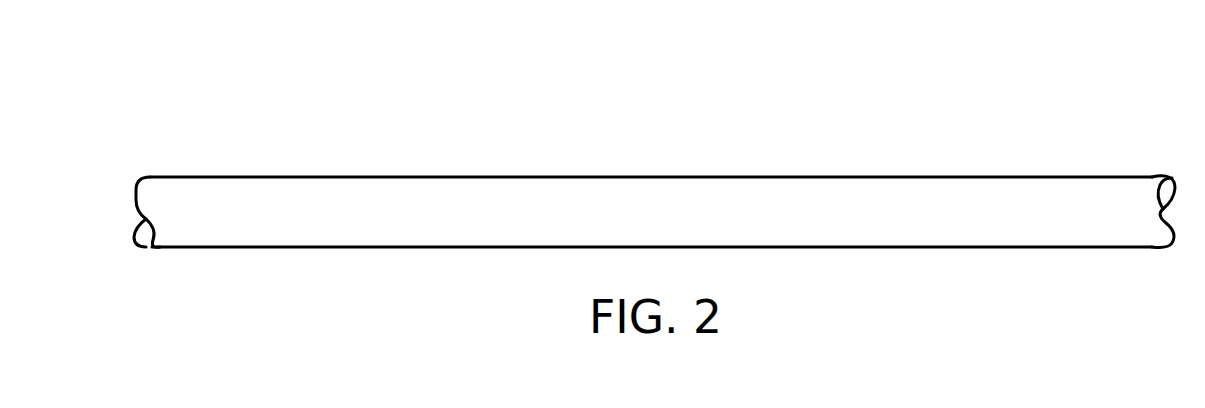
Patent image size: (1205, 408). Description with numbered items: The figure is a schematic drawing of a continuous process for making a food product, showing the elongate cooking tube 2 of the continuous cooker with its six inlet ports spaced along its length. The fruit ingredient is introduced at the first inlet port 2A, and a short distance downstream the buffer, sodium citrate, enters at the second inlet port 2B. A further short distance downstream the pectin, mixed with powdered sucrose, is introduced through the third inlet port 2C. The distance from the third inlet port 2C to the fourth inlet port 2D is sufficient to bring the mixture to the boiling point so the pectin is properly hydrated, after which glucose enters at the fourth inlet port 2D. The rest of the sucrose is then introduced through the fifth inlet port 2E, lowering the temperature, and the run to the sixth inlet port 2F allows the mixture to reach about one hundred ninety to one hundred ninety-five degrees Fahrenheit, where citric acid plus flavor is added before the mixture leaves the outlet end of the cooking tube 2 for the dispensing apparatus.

The elongate cooking tube 2 is at (259, 245).
The first inlet port 2A is at (176, 151).
The second inlet port 2B is at (254, 151).
The third inlet port 2C is at (366, 151).
The fourth inlet port 2D is at (512, 151).
The fifth inlet port 2E is at (753, 151).
The sixth inlet port 2F is at (1046, 151).